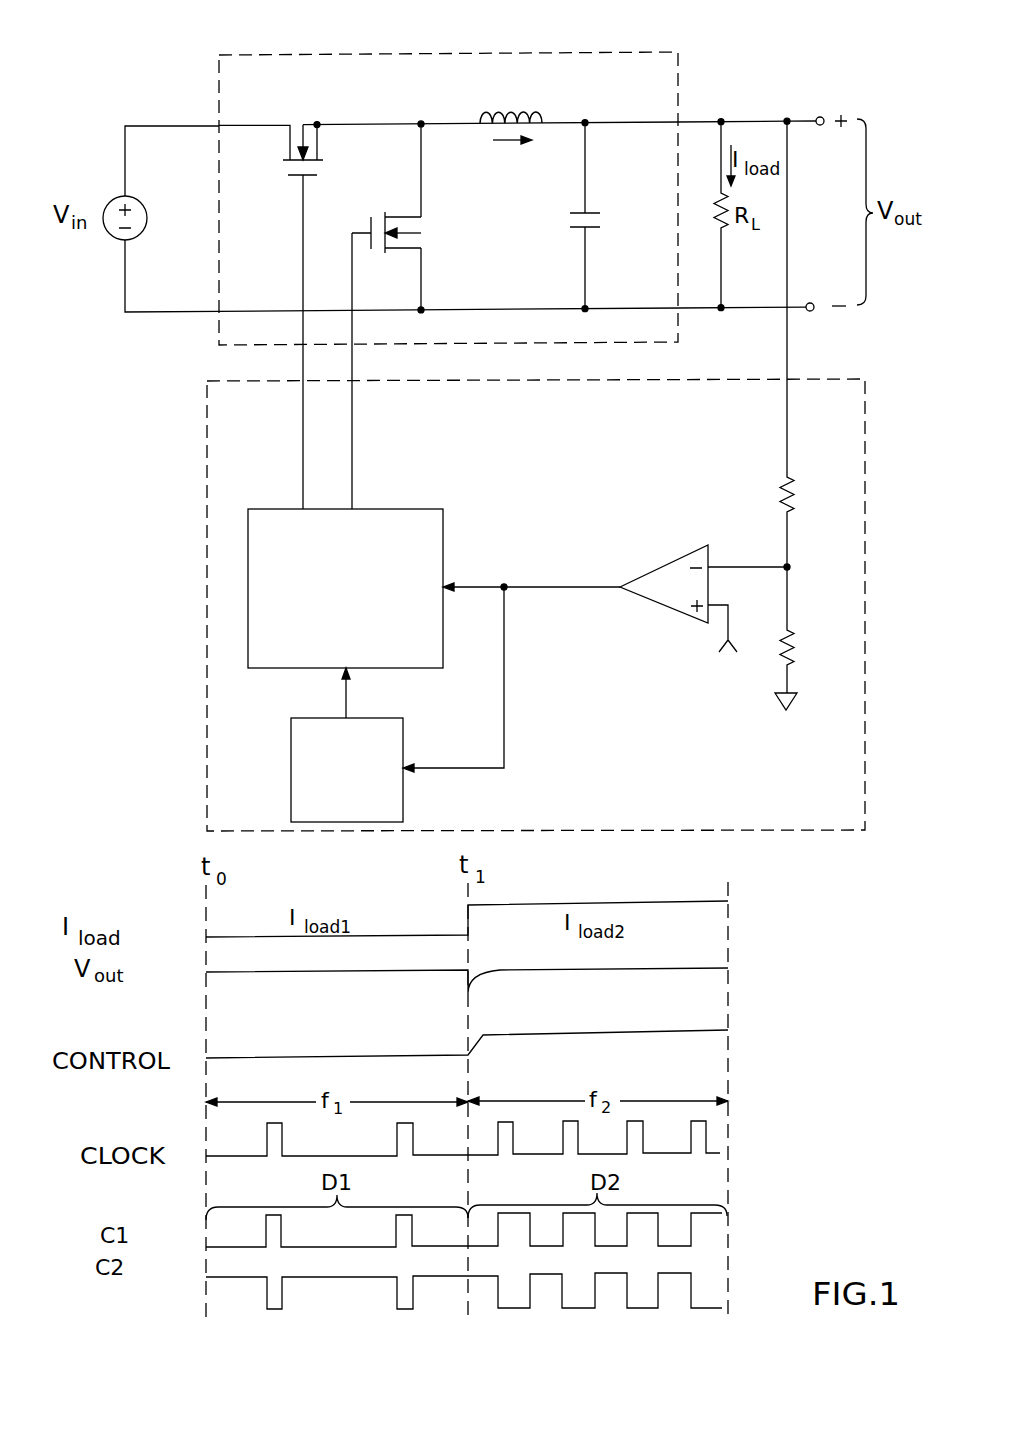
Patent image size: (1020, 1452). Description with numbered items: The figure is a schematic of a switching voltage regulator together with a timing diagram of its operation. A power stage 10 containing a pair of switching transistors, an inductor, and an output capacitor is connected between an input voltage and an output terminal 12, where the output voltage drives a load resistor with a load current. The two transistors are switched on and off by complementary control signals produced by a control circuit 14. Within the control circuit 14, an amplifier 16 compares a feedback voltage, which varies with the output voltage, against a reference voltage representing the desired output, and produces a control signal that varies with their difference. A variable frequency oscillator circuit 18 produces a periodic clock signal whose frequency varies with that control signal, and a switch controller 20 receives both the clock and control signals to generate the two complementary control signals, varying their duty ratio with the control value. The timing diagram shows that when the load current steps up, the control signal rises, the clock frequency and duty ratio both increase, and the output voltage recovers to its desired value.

The power stage 10 is at (283, 55).
The output terminal 12 is at (820, 117).
The control circuit 14 is at (496, 476).
The amplifier 16 is at (667, 607).
The variable frequency oscillator circuit 18 is at (290, 772).
The switch controller 20 is at (407, 508).